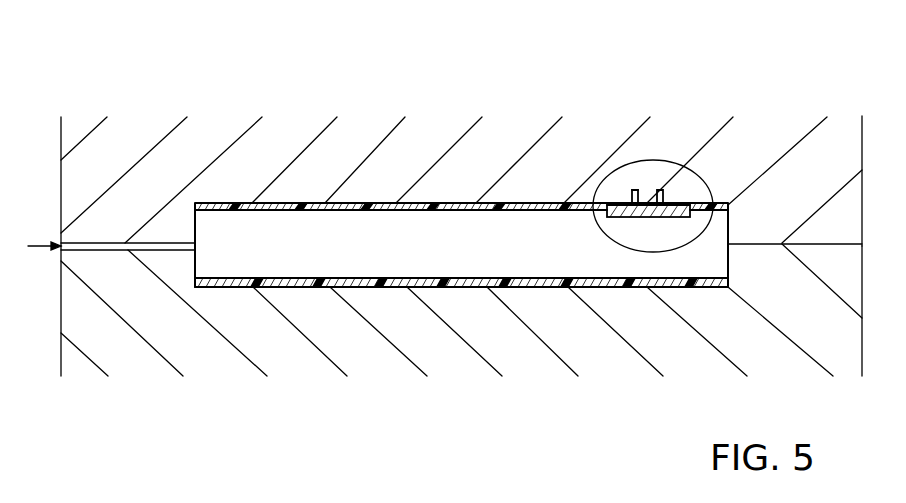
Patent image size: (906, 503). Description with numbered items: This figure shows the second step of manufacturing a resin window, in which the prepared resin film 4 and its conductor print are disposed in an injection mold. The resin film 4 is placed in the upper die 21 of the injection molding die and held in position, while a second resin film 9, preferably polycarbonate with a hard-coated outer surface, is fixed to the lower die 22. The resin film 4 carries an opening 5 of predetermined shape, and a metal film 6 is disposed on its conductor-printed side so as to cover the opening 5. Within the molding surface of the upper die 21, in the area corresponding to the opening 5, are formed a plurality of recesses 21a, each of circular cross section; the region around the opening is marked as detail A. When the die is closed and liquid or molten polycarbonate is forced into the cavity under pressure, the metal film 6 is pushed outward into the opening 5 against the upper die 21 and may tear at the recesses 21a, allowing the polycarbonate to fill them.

The upper die 21 is at (142, 147).
The lower die 22 is at (182, 335).
The resin film 4 is at (437, 201).
The resin film 9 is at (447, 287).
The opening 5 is at (672, 200).
The recesses 21a is at (640, 197).
The metal film 6 is at (655, 217).
The detail region A is at (614, 166).